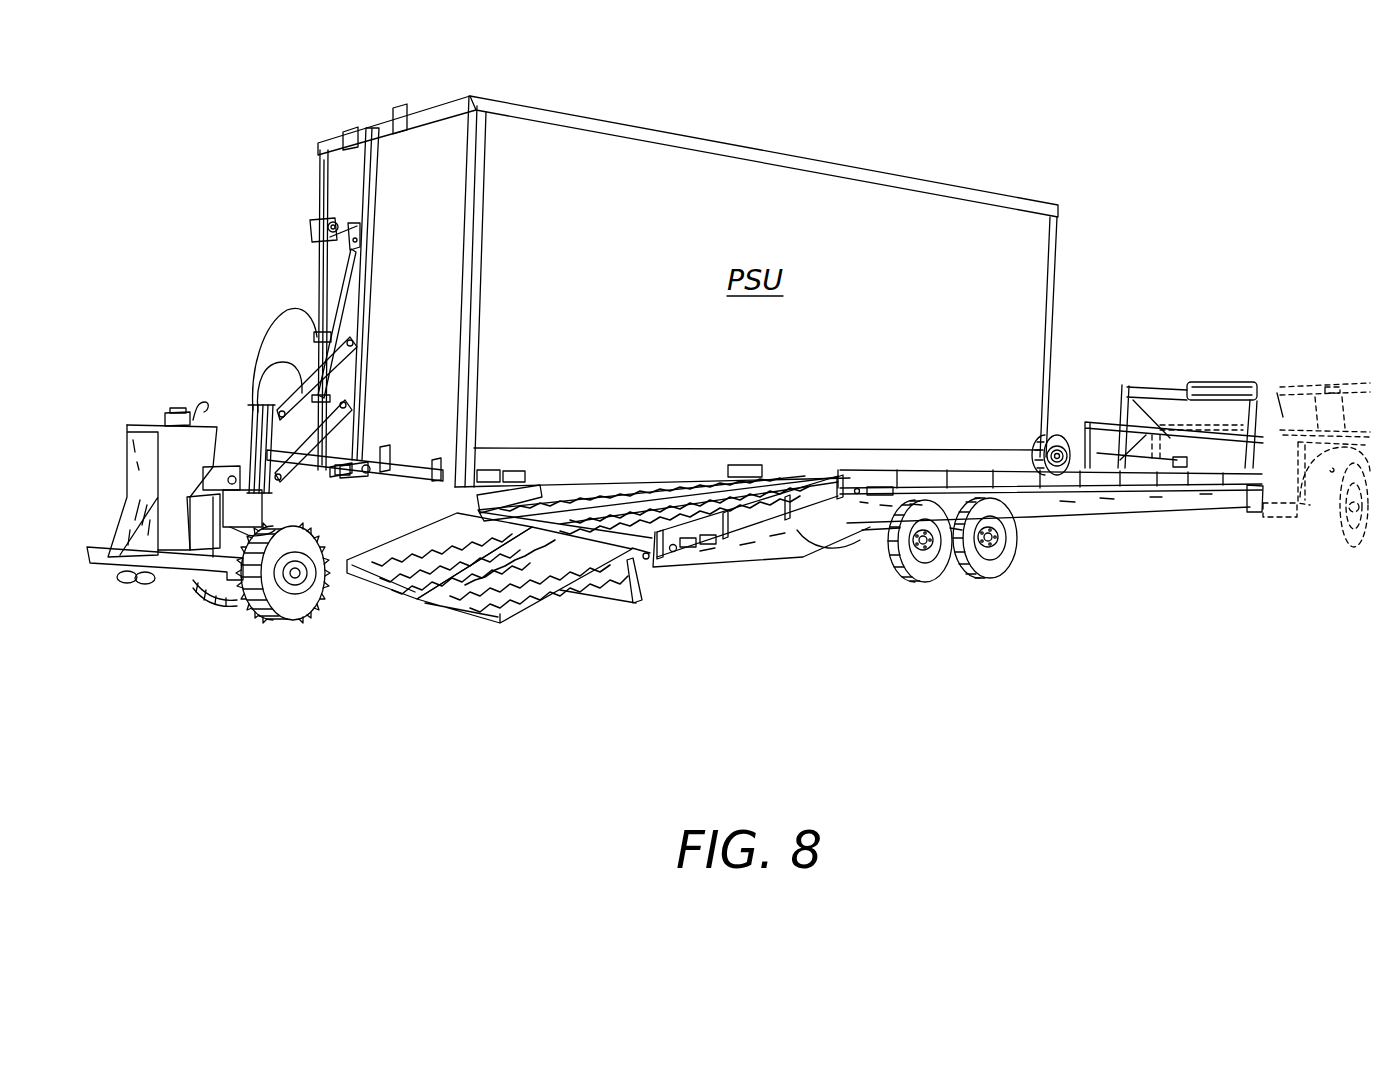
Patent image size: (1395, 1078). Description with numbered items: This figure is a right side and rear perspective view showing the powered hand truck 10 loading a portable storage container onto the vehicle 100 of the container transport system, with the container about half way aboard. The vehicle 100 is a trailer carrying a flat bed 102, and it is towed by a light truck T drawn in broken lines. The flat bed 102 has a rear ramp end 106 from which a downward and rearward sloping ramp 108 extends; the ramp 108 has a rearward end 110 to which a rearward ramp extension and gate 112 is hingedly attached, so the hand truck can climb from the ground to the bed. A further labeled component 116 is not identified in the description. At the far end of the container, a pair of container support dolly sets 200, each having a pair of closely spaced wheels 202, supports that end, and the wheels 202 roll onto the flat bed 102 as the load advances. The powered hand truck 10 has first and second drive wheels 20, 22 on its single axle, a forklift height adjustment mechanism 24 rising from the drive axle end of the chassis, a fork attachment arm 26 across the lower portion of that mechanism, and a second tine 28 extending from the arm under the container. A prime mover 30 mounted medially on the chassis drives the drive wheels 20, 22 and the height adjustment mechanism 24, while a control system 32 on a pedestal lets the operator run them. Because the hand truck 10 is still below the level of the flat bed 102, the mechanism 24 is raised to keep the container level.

The powered hand truck 10 is at (128, 296).
The first drive wheel 20 is at (213, 606).
The second drive wheel 22 is at (262, 617).
The forklift height adjustment mechanism 24 is at (272, 296).
The fork attachment arm 26 is at (335, 453).
The second tine 28 is at (382, 474).
The prime mover 30 is at (240, 473).
The control system 32 is at (168, 398).
The vehicle 100 is at (1104, 585).
The flat bed 102 is at (1010, 477).
The ramp end 106 is at (820, 500).
The ramp 108 is at (560, 490).
The rearward end 110 is at (573, 537).
The rearward ramp extension and gate 112 is at (433, 607).
The ramp 116 is at (652, 510).
The container support dolly sets 200 is at (1068, 410).
The wheels 202 is at (1050, 415).
The light truck T is at (1300, 340).